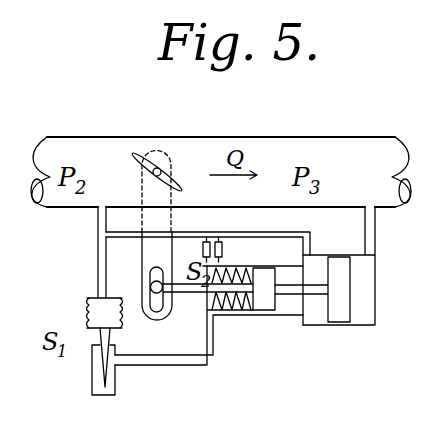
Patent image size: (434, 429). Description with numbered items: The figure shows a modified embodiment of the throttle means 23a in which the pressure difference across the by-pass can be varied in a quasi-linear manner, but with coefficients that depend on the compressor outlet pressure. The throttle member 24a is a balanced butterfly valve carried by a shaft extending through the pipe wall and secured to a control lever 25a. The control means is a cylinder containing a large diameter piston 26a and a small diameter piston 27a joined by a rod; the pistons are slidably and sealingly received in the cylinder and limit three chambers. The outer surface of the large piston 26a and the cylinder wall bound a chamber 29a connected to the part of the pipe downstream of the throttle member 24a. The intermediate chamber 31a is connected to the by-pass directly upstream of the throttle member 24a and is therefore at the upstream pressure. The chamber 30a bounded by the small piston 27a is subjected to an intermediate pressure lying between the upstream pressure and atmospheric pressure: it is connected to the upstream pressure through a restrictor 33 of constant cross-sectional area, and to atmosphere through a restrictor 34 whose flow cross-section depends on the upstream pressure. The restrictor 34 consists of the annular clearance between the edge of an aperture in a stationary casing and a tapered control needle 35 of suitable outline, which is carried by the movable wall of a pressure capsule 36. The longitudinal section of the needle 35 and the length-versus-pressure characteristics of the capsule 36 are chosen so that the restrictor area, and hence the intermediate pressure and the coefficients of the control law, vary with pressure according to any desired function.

The throttle means 23a is at (389, 312).
The throttle member 24a is at (155, 168).
The control lever 25a is at (168, 300).
The large diameter piston 26a is at (341, 310).
The small diameter piston 27a is at (275, 305).
The chamber 29a is at (363, 268).
The chamber 30a is at (220, 307).
The intermediate chamber 31a is at (317, 272).
The restrictor 33 is at (222, 251).
The restrictor 34 is at (117, 339).
The tapered control needle 35 is at (102, 358).
The pressure capsule 36 is at (96, 312).